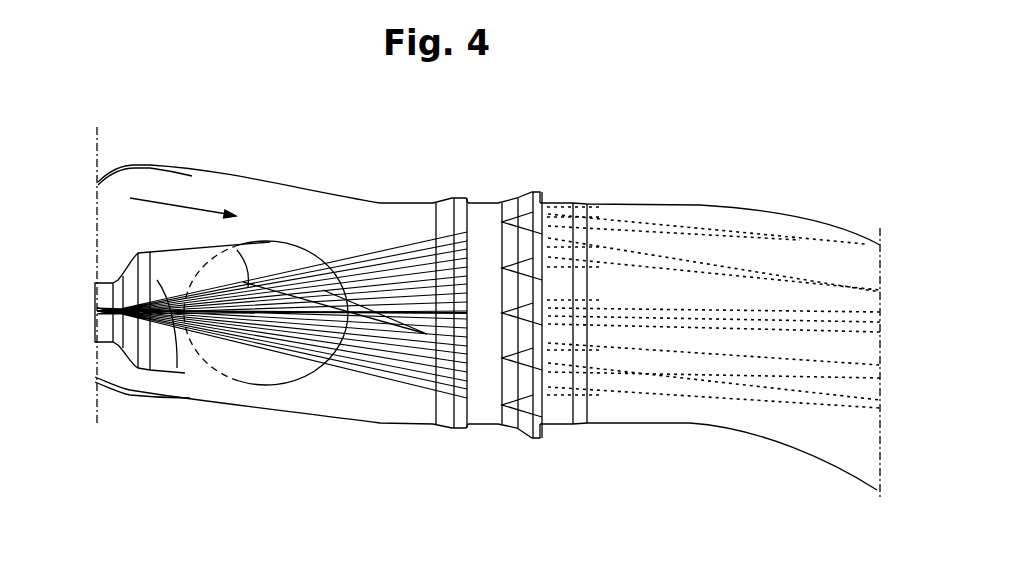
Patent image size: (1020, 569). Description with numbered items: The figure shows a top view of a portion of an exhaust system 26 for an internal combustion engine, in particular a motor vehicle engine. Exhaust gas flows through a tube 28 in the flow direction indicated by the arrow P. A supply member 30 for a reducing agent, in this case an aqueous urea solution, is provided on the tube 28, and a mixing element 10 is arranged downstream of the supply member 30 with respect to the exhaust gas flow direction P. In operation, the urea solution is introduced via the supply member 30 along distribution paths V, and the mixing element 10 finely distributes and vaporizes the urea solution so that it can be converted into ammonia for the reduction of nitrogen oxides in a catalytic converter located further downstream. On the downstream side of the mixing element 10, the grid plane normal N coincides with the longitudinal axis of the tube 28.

The mixing element 10 is at (485, 436).
The exhaust system 26 is at (630, 160).
The tube 28 is at (743, 230).
The supply member 30 is at (217, 355).
The flow direction arrow P is at (170, 207).
The distribution paths V is at (397, 270).
The grid plane normal N is at (608, 313).